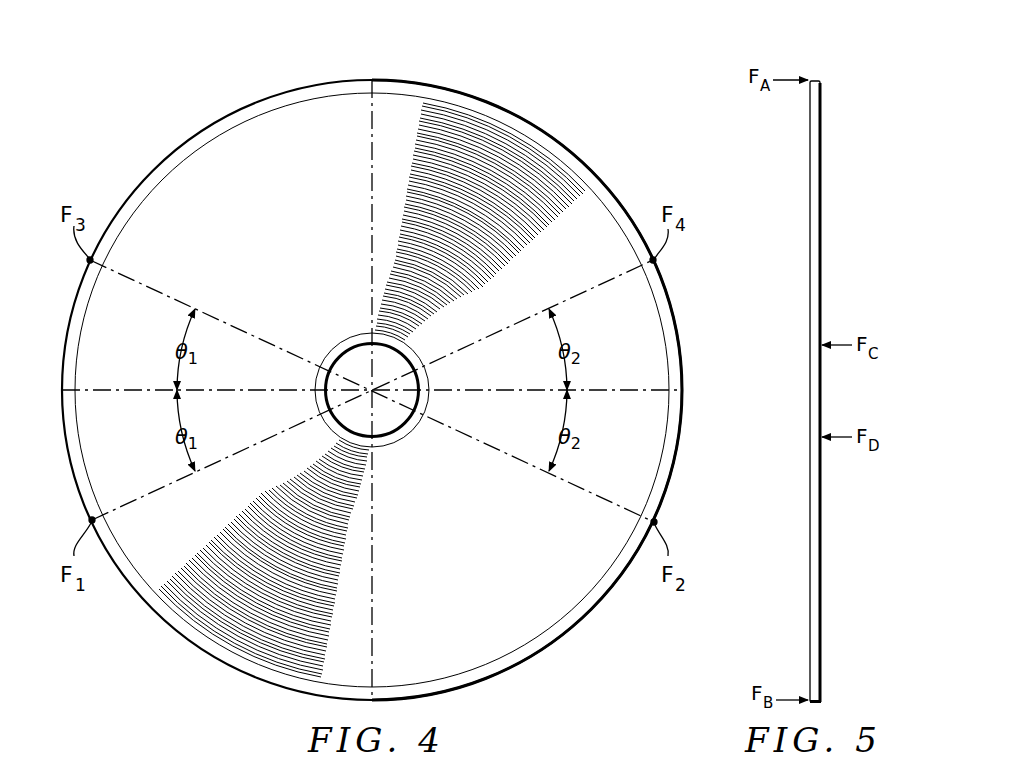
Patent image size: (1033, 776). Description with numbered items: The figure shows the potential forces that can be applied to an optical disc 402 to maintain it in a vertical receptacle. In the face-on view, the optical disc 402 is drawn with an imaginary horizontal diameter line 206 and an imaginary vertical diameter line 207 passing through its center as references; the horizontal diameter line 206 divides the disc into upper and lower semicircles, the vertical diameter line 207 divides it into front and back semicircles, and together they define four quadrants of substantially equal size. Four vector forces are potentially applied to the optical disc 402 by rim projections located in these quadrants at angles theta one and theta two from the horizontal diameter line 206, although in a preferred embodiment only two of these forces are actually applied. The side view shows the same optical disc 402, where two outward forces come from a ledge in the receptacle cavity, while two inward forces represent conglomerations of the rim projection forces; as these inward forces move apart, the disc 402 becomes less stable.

In FIG. 4, the optical disc 402 is at (453, 81).
In FIG. 5, the optical disc 402 is at (815, 78).
In FIG. 4, the horizontal diameter line 206 is at (112, 390).
In FIG. 4, the vertical diameter line 207 is at (372, 185).